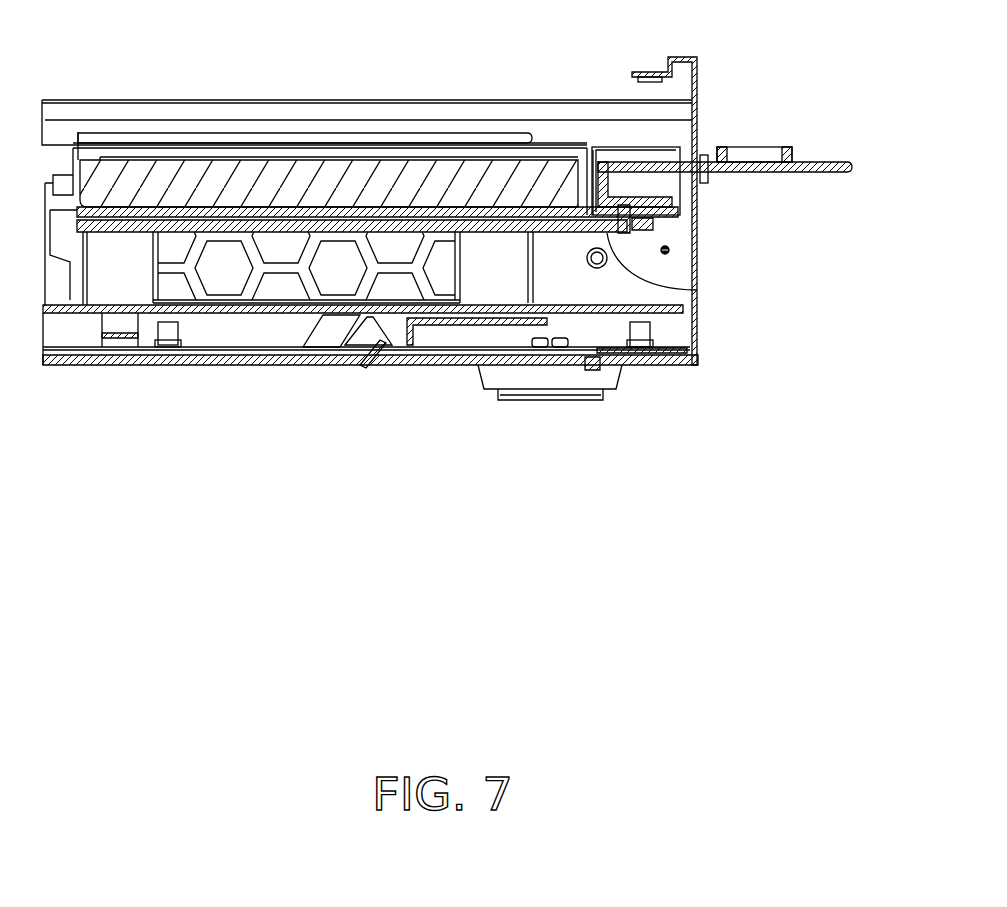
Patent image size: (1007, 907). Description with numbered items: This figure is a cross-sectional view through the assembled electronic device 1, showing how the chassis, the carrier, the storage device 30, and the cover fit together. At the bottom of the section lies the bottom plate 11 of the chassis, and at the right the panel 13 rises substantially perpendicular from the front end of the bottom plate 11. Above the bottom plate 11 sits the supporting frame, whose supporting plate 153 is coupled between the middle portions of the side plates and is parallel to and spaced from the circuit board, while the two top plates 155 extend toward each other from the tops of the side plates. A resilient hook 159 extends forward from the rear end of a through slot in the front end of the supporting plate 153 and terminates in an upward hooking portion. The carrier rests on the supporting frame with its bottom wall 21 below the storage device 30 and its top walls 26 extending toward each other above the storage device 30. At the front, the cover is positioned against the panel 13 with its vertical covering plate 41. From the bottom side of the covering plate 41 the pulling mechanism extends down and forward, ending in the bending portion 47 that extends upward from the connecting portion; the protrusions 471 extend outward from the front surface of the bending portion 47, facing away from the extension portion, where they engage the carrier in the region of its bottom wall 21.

The electronic device 1 is at (493, 71).
The bottom plate 11 is at (313, 360).
The panel 13 is at (698, 100).
The bottom wall 21 is at (697, 220).
The top walls 26 is at (245, 148).
The storage device 30 is at (175, 175).
The covering plate 41 is at (760, 173).
The bending portion 47 is at (650, 197).
The protrusions 471 is at (625, 187).
The supporting plate 153 is at (218, 232).
The top plates 155 is at (392, 140).
The resilient hook 159 is at (697, 290).